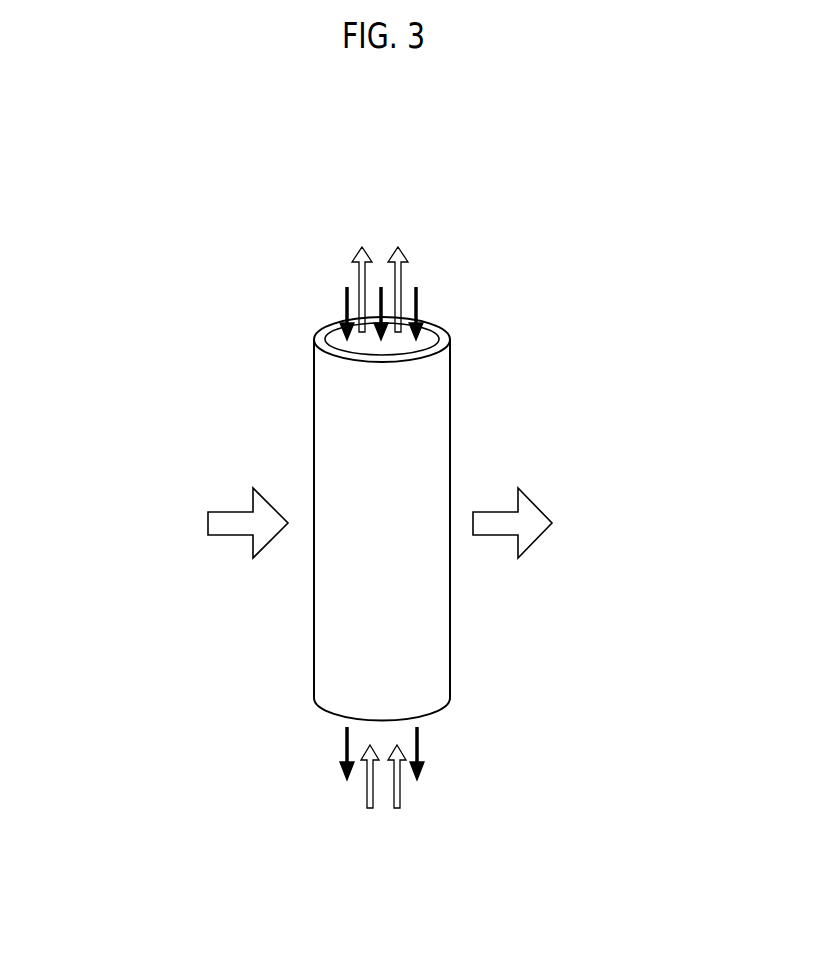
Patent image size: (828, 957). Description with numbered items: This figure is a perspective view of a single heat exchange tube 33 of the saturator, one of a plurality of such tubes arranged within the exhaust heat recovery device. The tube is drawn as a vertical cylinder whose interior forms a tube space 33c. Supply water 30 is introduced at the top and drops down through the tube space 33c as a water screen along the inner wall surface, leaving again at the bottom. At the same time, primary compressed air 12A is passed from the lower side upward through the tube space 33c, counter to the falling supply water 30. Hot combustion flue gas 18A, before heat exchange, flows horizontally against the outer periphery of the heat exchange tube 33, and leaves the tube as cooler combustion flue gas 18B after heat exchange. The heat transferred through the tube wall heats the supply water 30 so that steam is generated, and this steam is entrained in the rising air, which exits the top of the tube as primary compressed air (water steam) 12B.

The heat exchange tube 33 is at (451, 637).
The tube space 33c is at (372, 348).
The primary compressed air 12A is at (364, 792).
The primary compressed air (water steam) 12B is at (401, 272).
The supply water 30 is at (420, 308).
The combustion flue gas 18A is at (230, 512).
The combustion flue gas 18B is at (502, 512).